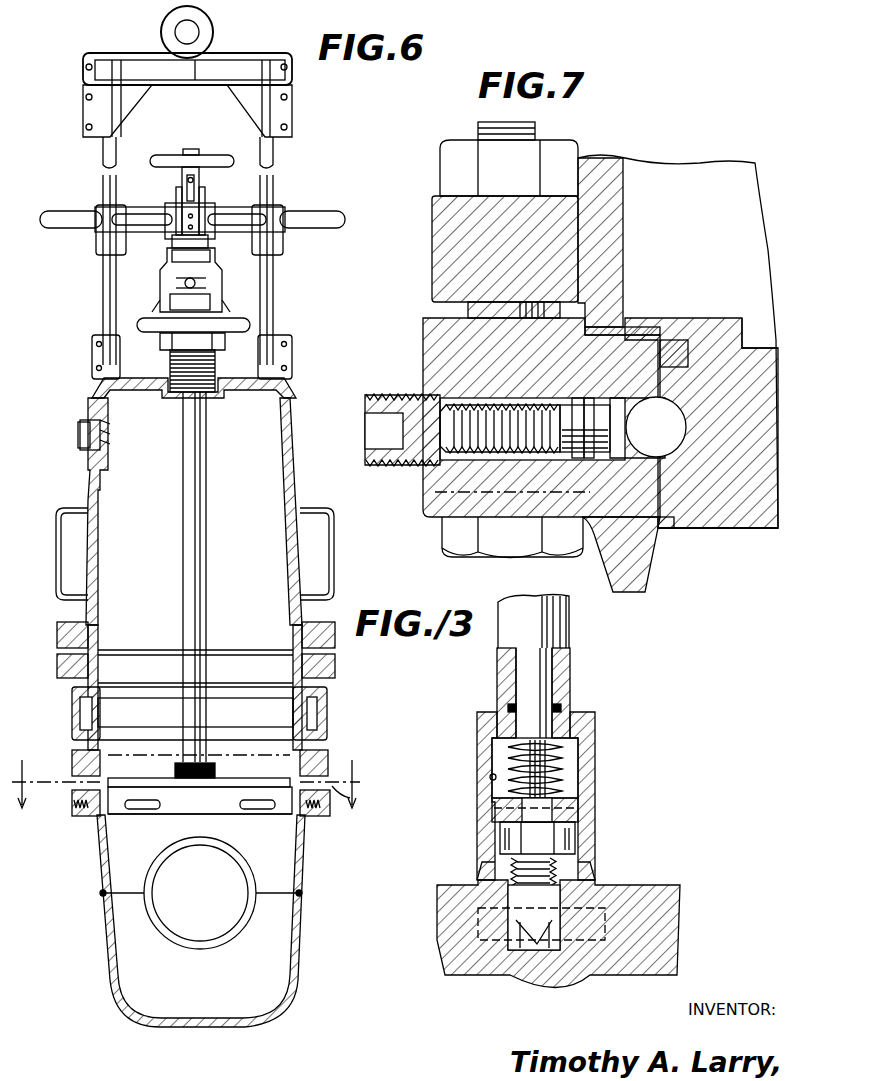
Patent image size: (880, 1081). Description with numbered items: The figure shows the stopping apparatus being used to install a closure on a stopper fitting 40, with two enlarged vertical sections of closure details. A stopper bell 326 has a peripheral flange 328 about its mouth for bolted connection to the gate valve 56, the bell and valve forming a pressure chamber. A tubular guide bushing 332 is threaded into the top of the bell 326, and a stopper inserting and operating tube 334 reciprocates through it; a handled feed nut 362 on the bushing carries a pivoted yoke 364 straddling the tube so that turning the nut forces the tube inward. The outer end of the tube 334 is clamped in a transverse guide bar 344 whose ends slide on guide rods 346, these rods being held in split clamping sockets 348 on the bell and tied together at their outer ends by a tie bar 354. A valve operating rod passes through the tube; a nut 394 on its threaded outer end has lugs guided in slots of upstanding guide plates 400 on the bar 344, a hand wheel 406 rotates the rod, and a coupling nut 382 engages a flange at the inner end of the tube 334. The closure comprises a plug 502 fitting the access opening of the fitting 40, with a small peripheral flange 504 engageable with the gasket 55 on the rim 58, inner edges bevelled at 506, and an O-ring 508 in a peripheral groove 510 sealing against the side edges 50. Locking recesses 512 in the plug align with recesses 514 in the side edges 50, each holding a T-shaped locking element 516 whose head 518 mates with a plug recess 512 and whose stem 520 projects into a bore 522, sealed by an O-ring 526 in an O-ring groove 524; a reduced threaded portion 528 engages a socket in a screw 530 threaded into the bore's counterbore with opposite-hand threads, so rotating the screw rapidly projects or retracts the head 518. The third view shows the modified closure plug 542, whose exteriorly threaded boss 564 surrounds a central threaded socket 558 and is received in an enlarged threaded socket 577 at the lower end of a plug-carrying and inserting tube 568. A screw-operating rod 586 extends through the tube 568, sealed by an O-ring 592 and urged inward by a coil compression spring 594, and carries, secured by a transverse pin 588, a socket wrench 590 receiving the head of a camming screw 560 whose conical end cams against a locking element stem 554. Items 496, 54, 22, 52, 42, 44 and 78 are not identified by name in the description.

In FIG. 6, the tie bar 354 is at (228, 55).
In FIG. 6, the guide rods 346 is at (103, 292).
In FIG. 6, the hand wheel 406 is at (153, 156).
In FIG. 6, the guide plates 400 is at (183, 181).
In FIG. 6, the nut 394 is at (205, 197).
In FIG. 6, the guide bar 344 is at (162, 207).
In FIG. 6, the feed nut 362 is at (163, 298).
In FIG. 6, the yoke 364 is at (225, 296).
In FIG. 6, the guide bushing 332 is at (230, 340).
In FIG. 6, the split clamping sockets 348 is at (120, 360).
In FIG. 6, the stopper bell 326 is at (293, 427).
In FIG. 6, the boss 496 is at (82, 436).
In FIG. 6, the stopper inserting and operating tube 334 is at (208, 501).
In FIG. 6, the peripheral flange 328 is at (57, 638).
In FIG. 6, the gate valve 56 is at (328, 705).
In FIG. 7, the gate valve 56 is at (432, 225).
In FIG. 6, the nut 54 is at (330, 752).
In FIG. 7, the nut 54 is at (446, 552).
In FIG. 6, the section line 22 is at (192, 773).
In FIG. 6, the coupling nut 382 is at (216, 770).
In FIG. 6, the peripheral flange 504 is at (140, 778).
In FIG. 7, the peripheral flange 504 is at (657, 330).
In FIG. 6, the O-ring 508 is at (163, 794).
In FIG. 7, the O-ring 508 is at (680, 342).
In FIG. 6, the locking recesses 512 is at (140, 810).
In FIG. 7, the locking recesses 512 is at (687, 428).
In FIG. 6, the clamp block 52 is at (75, 790).
In FIG. 7, the clamp block 52 is at (425, 335).
In FIG. 6, the locking element 516 is at (96, 814).
In FIG. 7, the locking element 516 is at (592, 512).
In FIG. 6, the screw 530 is at (360, 801).
In FIG. 7, the screw 530 is at (386, 466).
In FIG. 6, the plug 502 is at (244, 815).
In FIG. 7, the plug 502 is at (758, 530).
In FIG. 6, the housing wall 42 is at (97, 858).
In FIG. 7, the housing wall 42 is at (632, 478).
In FIG. 6, the housing bottom 44 is at (108, 952).
In FIG. 6, the stopper fitting 40 is at (314, 874).
In FIG. 7, the stopper fitting 40 is at (410, 377).
In FIG. 6, the port 78 is at (233, 936).
In FIG. 7, the stem 520 is at (615, 290).
In FIG. 7, the gasket 55 is at (630, 327).
In FIG. 7, the rim 58 is at (648, 327).
In FIG. 7, the peripheral groove 510 is at (743, 320).
In FIG. 7, the bore 522 is at (535, 398).
In FIG. 7, the O-ring groove 524 is at (576, 398).
In FIG. 7, the O-ring 526 is at (588, 398).
In FIG. 7, the head 518 is at (672, 402).
In FIG. 7, the reduced threaded portion 528 is at (510, 550).
In FIG. 7, the edge recesses 514 is at (646, 570).
In FIG. 7, the bevelled inner edges 506 is at (668, 532).
In FIG. 7, the side edges 50 is at (712, 530).
In FIG. 13, the plug-carrying and inserting tube 568 is at (574, 643).
In FIG. 13, the screw-operating rod 586 is at (524, 681).
In FIG. 13, the O-ring 592 is at (572, 708).
In FIG. 13, the coil compression spring 594 is at (566, 752).
In FIG. 13, the threaded socket 577 is at (494, 782).
In FIG. 13, the transverse pin 588 is at (582, 802).
In FIG. 13, the socket wrench 590 is at (580, 828).
In FIG. 13, the camming screws 560 is at (562, 878).
In FIG. 13, the threaded boss 564 is at (508, 868).
In FIG. 13, the closure plug 542 is at (652, 884).
In FIG. 13, the threaded sockets 558 is at (527, 948).
In FIG. 13, the stems 554 is at (555, 958).